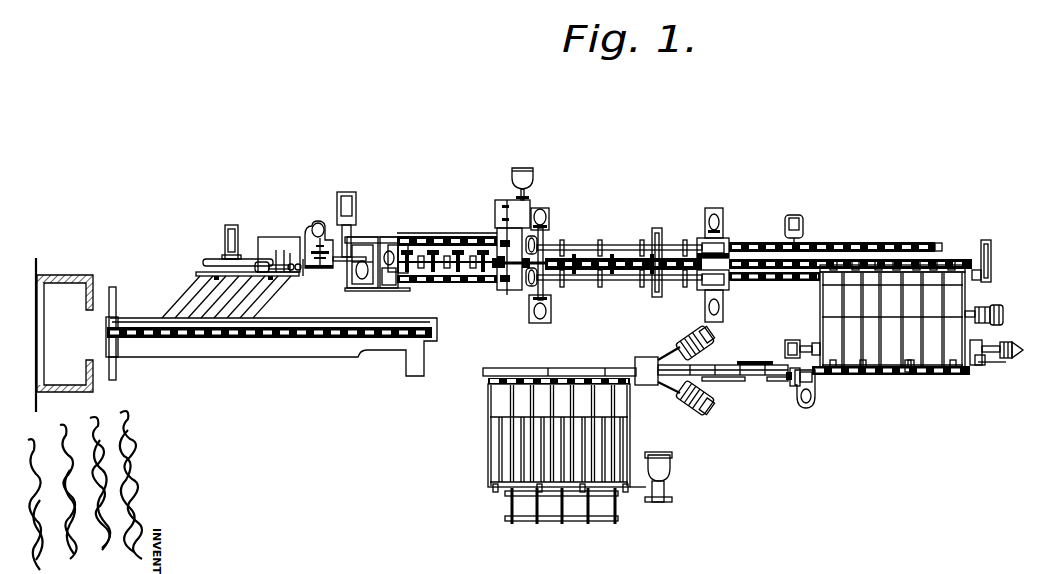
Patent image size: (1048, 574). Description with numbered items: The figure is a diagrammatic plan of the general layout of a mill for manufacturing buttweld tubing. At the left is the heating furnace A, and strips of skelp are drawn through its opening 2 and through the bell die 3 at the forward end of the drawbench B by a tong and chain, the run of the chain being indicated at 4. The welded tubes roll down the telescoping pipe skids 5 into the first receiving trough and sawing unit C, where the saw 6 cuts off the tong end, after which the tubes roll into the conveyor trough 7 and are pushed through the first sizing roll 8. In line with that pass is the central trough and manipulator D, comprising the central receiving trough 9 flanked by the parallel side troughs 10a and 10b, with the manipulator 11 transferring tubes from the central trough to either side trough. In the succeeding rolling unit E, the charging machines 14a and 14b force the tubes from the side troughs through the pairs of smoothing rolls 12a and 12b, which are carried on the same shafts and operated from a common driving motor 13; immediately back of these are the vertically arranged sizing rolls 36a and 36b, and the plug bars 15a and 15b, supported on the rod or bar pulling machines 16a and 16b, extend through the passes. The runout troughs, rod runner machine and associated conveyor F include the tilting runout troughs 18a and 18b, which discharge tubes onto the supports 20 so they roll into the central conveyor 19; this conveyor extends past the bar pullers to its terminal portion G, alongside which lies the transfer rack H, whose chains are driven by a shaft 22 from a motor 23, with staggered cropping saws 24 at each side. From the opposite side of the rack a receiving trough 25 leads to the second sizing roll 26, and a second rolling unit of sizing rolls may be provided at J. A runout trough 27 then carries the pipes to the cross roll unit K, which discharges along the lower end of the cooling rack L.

The heating furnace A is at (52, 297).
The opening 2 is at (97, 318).
The bell die 3 is at (120, 326).
The run of the chain 4 is at (190, 337).
The telescoping pipe skids 5 is at (197, 291).
The saw 6 is at (307, 282).
The conveyor trough 7 is at (220, 256).
The first sizing roll 8 is at (320, 262).
The central receiving conveyor or trough 9 is at (438, 264).
The side trough 10a is at (440, 248).
The side trough 10b is at (466, 283).
The manipulator 11 is at (415, 252).
The pair of rolls 12a is at (496, 257).
The pair of rolls 12b is at (517, 283).
The common driving motor 13 is at (522, 176).
The charging machine 14a is at (362, 248).
The charging machine 14b is at (389, 280).
The plug bar 15a is at (552, 240).
The plug bar 15b is at (549, 281).
The rod or bar pulling machine 16a is at (722, 239).
The rod or bar pulling machine 16b is at (722, 289).
The runout trough 18a is at (630, 243).
The runout trough 18b is at (630, 281).
The central conveyor 19 is at (618, 257).
The supports 20 is at (590, 246).
The shaft 22 is at (953, 368).
The motor 23 is at (1001, 360).
The cropping saws 24 is at (800, 344).
The receiving trough or conveyor 25 is at (910, 371).
The second sizing roll 26 is at (792, 380).
The runout trough 27 is at (715, 369).
The sizing rolls 36a is at (547, 227).
The sizing rolls 36b is at (531, 300).
The drawbench B is at (254, 352).
The first receiving trough and sawing unit C is at (243, 257).
The central trough and manipulator D is at (444, 234).
The rolling unit E is at (541, 198).
The runout troughs, rod runner machine and associated conveyor F is at (670, 237).
The terminal portion of the conveyor G is at (843, 248).
The transfer rack H is at (852, 302).
The second rolling unit J is at (816, 398).
The cross roll unit K is at (650, 382).
The cooling rack L is at (500, 399).